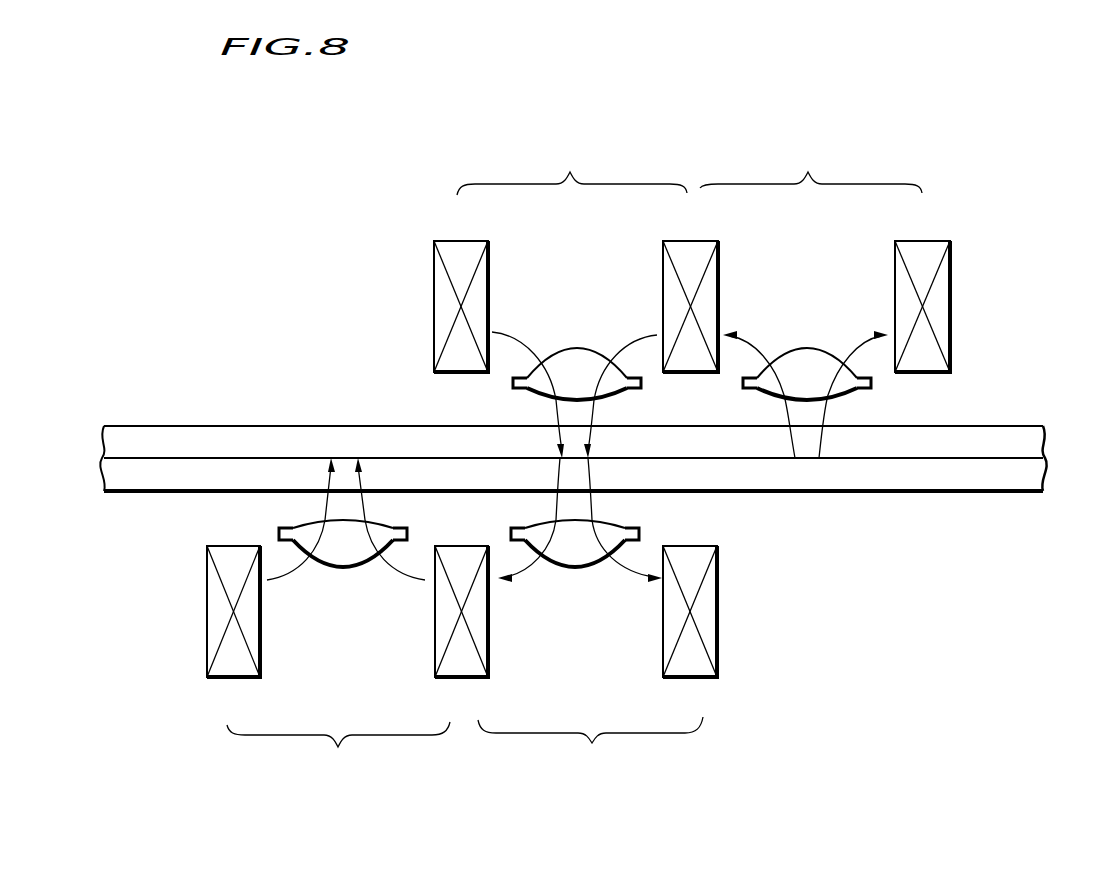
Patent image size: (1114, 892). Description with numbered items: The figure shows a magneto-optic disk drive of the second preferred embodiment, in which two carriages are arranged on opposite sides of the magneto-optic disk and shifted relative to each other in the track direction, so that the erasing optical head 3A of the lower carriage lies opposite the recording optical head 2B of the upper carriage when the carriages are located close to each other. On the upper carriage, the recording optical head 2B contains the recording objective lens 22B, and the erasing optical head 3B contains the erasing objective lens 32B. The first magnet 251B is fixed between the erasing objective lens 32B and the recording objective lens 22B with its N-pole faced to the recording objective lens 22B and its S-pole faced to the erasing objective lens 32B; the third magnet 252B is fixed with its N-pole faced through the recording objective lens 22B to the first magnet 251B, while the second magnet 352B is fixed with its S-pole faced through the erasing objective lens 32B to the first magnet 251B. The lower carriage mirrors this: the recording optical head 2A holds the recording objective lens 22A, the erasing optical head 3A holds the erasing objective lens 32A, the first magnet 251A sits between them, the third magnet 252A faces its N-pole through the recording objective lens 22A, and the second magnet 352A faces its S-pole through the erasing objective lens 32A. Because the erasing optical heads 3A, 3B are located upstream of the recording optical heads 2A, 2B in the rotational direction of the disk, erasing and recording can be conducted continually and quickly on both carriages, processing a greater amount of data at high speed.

The recording optical head 2B is at (570, 170).
The erasing optical head 3B is at (808, 170).
The recording objective lens 22B is at (572, 358).
The erasing objective lens 32B is at (800, 363).
The first magnet 251B is at (690, 241).
The third magnet 252B is at (434, 250).
The second magnet 352B is at (928, 248).
The recording optical head 2A is at (338, 748).
The erasing optical head 3A is at (590, 748).
The recording objective lens 22A is at (337, 560).
The erasing objective lens 32A is at (568, 562).
The first magnet 251A is at (472, 677).
The third magnet 252A is at (207, 652).
The second magnet 352A is at (717, 653).